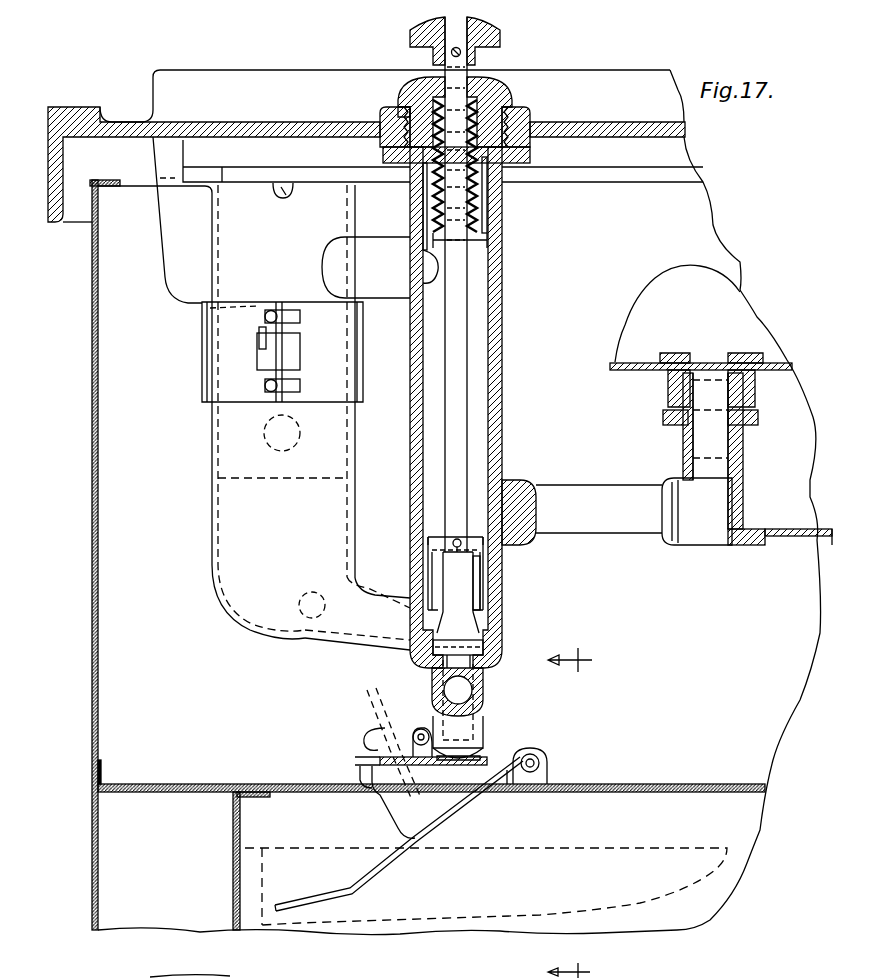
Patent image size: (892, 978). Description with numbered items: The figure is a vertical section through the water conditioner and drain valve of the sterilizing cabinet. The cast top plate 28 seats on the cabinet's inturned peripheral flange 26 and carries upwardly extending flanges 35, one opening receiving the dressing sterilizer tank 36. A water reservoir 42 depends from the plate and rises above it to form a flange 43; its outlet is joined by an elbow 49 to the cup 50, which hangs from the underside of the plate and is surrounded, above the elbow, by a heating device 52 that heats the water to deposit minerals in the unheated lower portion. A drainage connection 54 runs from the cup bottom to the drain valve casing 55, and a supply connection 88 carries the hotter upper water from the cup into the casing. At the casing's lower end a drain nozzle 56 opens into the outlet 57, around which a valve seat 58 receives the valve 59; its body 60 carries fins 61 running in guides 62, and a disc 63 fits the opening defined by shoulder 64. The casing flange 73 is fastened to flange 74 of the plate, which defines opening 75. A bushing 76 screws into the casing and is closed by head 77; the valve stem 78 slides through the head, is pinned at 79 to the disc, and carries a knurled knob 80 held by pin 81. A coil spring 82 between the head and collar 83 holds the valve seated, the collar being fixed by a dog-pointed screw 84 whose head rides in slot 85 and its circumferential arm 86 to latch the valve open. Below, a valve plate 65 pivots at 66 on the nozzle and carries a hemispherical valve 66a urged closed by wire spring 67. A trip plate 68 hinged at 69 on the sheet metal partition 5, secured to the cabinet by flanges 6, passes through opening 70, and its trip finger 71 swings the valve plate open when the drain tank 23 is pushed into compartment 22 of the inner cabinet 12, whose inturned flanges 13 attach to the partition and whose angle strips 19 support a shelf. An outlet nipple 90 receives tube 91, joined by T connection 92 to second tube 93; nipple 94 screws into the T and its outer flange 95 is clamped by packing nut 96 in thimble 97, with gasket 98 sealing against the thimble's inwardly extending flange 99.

The partition 5 is at (626, 784).
The securing flanges 6 is at (101, 774).
The inner cabinet 12 is at (233, 877).
The inturned flanges 13 is at (258, 798).
The angle strips 19 is at (580, 653).
The compartment 22 is at (684, 810).
The drain tank 23 is at (552, 847).
The inturned peripheral flange 26 is at (143, 190).
The top plate 28 is at (655, 149).
The upwardly extending flanges 35 is at (642, 74).
The tank 36 is at (656, 276).
The water reservoir 42 is at (170, 290).
The flange 43 is at (215, 52).
The elbow 49 is at (298, 447).
The cup 50 is at (212, 526).
The heating device 52 is at (205, 365).
The drainage connection 54 is at (348, 645).
The drain valve casing 55 is at (504, 332).
The drain nozzle 56 is at (480, 712).
The outlet 57 is at (472, 671).
The valve seat 58 is at (487, 646).
The valve 59 is at (440, 671).
The body 60 is at (462, 570).
The fins 61 is at (478, 586).
The guides 62 is at (486, 605).
The disc 63 is at (430, 536).
The shoulder 64 is at (430, 549).
The valve plate 65 is at (362, 762).
The pivot 66 is at (418, 732).
The hemispherical valve 66a is at (488, 752).
The wire spring 67 is at (372, 749).
The trip plate 68 is at (388, 857).
The hinge 69 is at (541, 762).
The opening 70 is at (508, 794).
The trip finger 71 is at (382, 800).
The flange 73 is at (531, 158).
The flange 74 is at (522, 112).
The opening 75 is at (510, 115).
The bushing 76 is at (420, 200).
The head 77 is at (484, 82).
The valve stem 78 is at (466, 432).
The pin 79 is at (418, 510).
The knurled knob 80 is at (414, 36).
The pin 81 is at (450, 52).
The expansion coil spring 82 is at (410, 110).
The collar 83 is at (422, 231).
The dog-pointed screw 84 is at (507, 248).
The slot 85 is at (488, 210).
The arm 86 is at (500, 192).
The supply connection 88 is at (332, 250).
The outlet nipple 90 is at (528, 484).
The tube 91 is at (600, 495).
The T connection 92 is at (707, 546).
The second tube 93 is at (790, 540).
The nipple 94 is at (686, 452).
The outer flange 95 is at (697, 368).
The packing nut 96 is at (752, 427).
The thimble 97 is at (668, 389).
The gasket 98 is at (716, 366).
The inwardly extending flange 99 is at (675, 362).